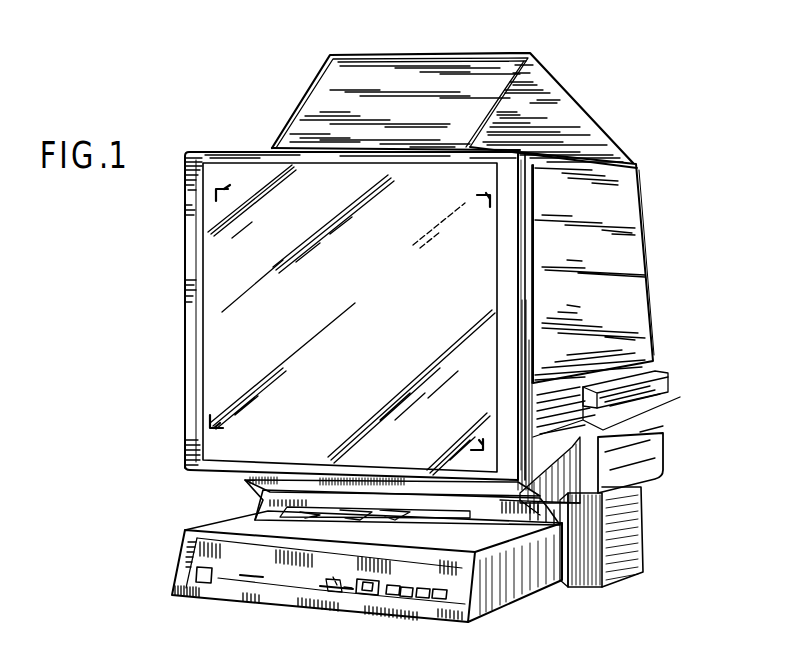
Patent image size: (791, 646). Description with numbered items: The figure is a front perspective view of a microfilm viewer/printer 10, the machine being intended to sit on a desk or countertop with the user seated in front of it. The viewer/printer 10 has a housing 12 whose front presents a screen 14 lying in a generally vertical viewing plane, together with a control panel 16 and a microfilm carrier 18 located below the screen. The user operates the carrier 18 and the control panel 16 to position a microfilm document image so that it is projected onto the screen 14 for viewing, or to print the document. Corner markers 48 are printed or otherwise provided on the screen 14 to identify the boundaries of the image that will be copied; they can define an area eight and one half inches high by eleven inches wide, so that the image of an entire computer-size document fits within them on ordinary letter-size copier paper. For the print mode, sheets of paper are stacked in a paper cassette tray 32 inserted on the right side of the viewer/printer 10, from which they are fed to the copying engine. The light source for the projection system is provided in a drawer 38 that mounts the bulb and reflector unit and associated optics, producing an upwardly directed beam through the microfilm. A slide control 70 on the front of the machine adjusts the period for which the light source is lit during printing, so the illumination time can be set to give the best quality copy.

The viewer/printer 10 is at (504, 46).
The housing 12 is at (640, 221).
The screen 14 is at (238, 175).
The control panel 16 is at (293, 577).
The microfilm carrier 18 is at (265, 503).
The paper cassette tray 32 is at (655, 445).
The drawer 38 is at (530, 590).
The corner markers 48 is at (221, 196).
The slide control 70 is at (326, 596).